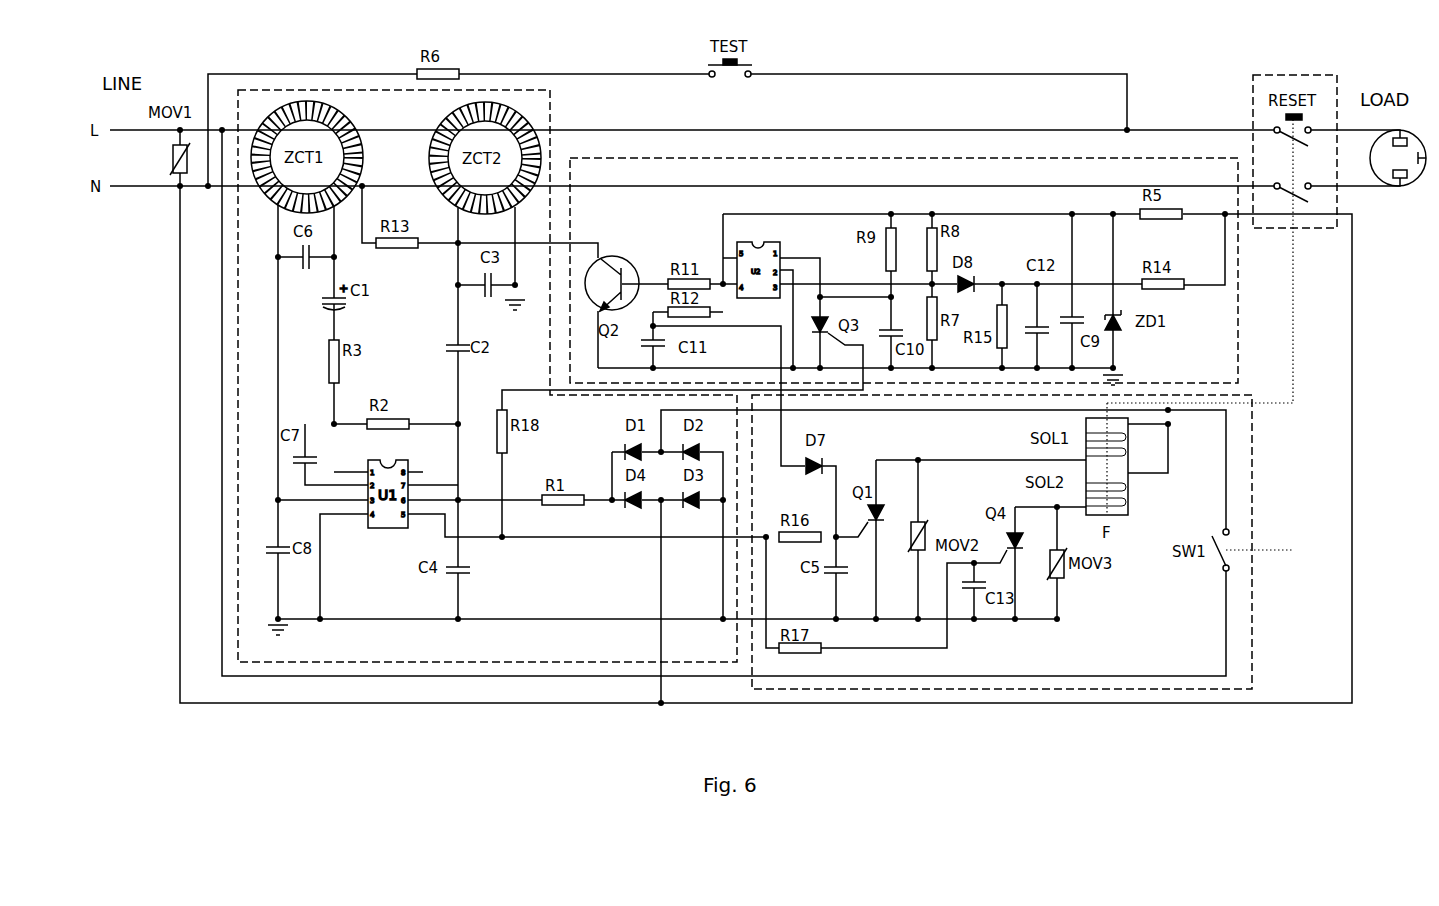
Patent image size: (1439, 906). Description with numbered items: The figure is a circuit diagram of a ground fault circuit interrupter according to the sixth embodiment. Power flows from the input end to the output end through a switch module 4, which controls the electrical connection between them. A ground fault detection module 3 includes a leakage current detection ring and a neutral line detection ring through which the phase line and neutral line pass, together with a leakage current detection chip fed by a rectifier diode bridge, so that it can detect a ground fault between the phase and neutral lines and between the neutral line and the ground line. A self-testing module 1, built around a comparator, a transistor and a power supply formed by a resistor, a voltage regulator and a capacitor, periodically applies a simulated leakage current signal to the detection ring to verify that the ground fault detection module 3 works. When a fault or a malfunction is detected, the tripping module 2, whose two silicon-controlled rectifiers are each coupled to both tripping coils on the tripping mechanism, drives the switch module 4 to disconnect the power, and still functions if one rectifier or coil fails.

The self-testing module 1 is at (1220, 352).
The tripping module 2 is at (1236, 502).
The ground fault detection module 3 is at (533, 97).
The switch module 4 is at (1305, 92).